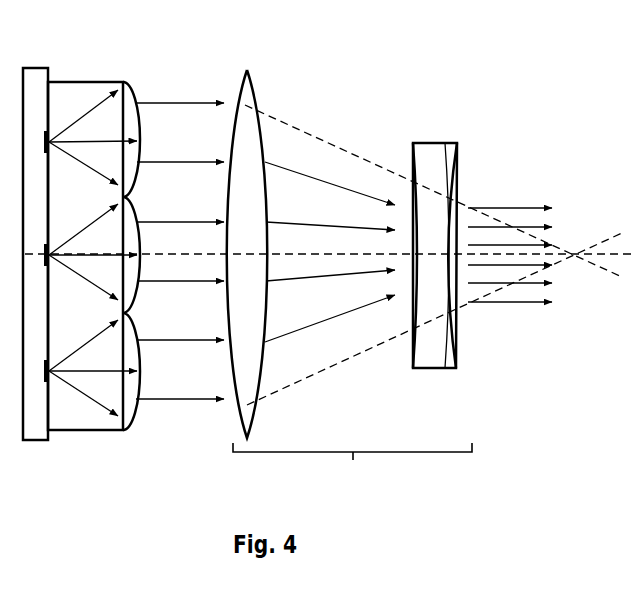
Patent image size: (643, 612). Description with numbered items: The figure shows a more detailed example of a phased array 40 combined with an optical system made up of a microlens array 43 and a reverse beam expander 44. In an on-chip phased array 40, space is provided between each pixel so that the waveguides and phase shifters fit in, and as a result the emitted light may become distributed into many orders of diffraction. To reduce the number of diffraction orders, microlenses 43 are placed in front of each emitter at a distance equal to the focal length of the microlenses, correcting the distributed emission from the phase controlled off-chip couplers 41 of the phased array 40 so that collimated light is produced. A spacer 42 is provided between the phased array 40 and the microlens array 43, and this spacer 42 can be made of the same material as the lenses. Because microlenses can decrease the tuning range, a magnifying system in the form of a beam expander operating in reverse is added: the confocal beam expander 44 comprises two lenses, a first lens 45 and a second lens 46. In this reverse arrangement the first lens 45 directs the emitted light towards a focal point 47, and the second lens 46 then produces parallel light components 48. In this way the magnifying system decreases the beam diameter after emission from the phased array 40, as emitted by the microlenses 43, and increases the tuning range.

The phased array 40 is at (38, 422).
The phase controlled off-chip couplers 41 is at (55, 125).
The spacer 42 is at (75, 405).
The microlens array 43 is at (138, 413).
The reverse beam expander 44 is at (354, 262).
The first lens 45 is at (250, 137).
The second lens 46 is at (430, 163).
The focal point 47 is at (575, 262).
The parallel light components 48 is at (522, 305).